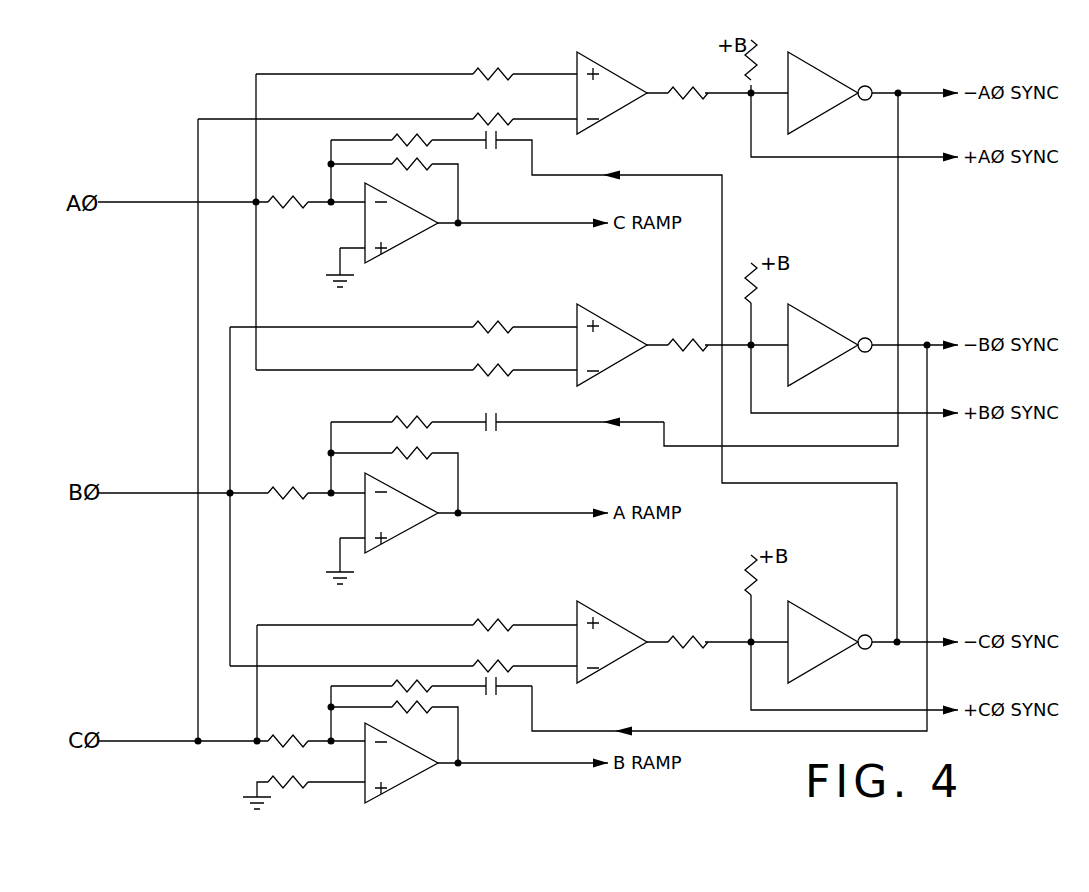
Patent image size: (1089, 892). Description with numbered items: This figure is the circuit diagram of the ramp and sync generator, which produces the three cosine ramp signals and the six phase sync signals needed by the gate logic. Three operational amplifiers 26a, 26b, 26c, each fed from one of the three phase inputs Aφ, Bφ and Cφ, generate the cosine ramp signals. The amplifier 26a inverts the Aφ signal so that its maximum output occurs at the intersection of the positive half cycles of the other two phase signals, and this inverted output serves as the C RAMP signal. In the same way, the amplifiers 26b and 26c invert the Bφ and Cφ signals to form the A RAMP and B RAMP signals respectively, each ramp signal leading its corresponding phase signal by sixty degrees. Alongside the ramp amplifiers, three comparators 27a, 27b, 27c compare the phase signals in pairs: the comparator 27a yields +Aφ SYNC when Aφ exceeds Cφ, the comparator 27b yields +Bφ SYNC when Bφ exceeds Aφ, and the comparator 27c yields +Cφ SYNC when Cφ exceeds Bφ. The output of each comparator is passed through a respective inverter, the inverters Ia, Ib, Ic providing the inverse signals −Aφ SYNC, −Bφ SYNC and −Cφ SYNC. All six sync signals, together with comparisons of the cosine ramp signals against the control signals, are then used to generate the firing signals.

The operational amplifier 26a is at (412, 236).
The operational amplifier 26b is at (412, 530).
The operational amplifier 26c is at (414, 778).
The comparator 27a is at (617, 110).
The comparator 27b is at (617, 322).
The comparator 27c is at (616, 622).
The inverter Ia is at (828, 116).
The inverter Ib is at (832, 362).
The inverter Ic is at (832, 660).